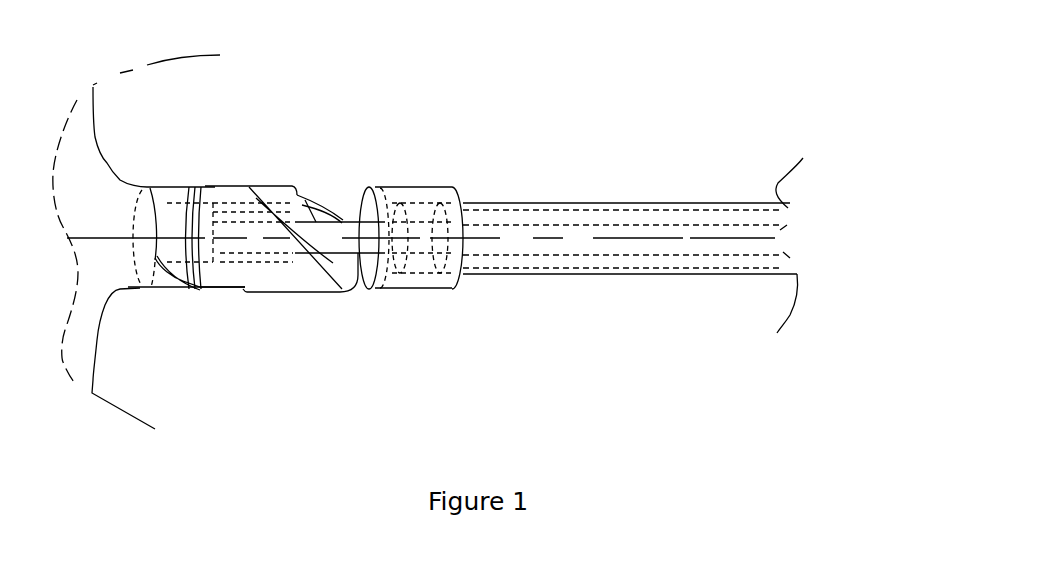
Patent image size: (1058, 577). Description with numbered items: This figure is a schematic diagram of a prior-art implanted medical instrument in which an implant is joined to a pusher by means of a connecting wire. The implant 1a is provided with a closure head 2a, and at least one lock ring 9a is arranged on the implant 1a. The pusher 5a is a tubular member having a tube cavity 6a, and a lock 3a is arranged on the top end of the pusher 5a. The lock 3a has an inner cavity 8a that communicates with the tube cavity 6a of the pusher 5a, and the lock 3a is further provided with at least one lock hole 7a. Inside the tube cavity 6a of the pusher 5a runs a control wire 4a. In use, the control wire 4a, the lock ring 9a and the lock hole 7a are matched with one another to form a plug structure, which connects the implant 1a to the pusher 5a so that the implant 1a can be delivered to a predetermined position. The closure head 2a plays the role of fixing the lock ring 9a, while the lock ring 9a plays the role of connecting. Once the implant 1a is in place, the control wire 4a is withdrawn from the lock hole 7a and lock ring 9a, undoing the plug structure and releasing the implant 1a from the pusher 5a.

The implant 1a is at (92, 183).
The closure head 2a is at (158, 187).
The lock 3a is at (240, 197).
The control wire 4a is at (365, 192).
The pusher 5a is at (513, 203).
The tube cavity 6a is at (605, 203).
The lock hole 7a is at (366, 258).
The inner cavity 8a is at (250, 265).
The lock ring 9a is at (203, 289).